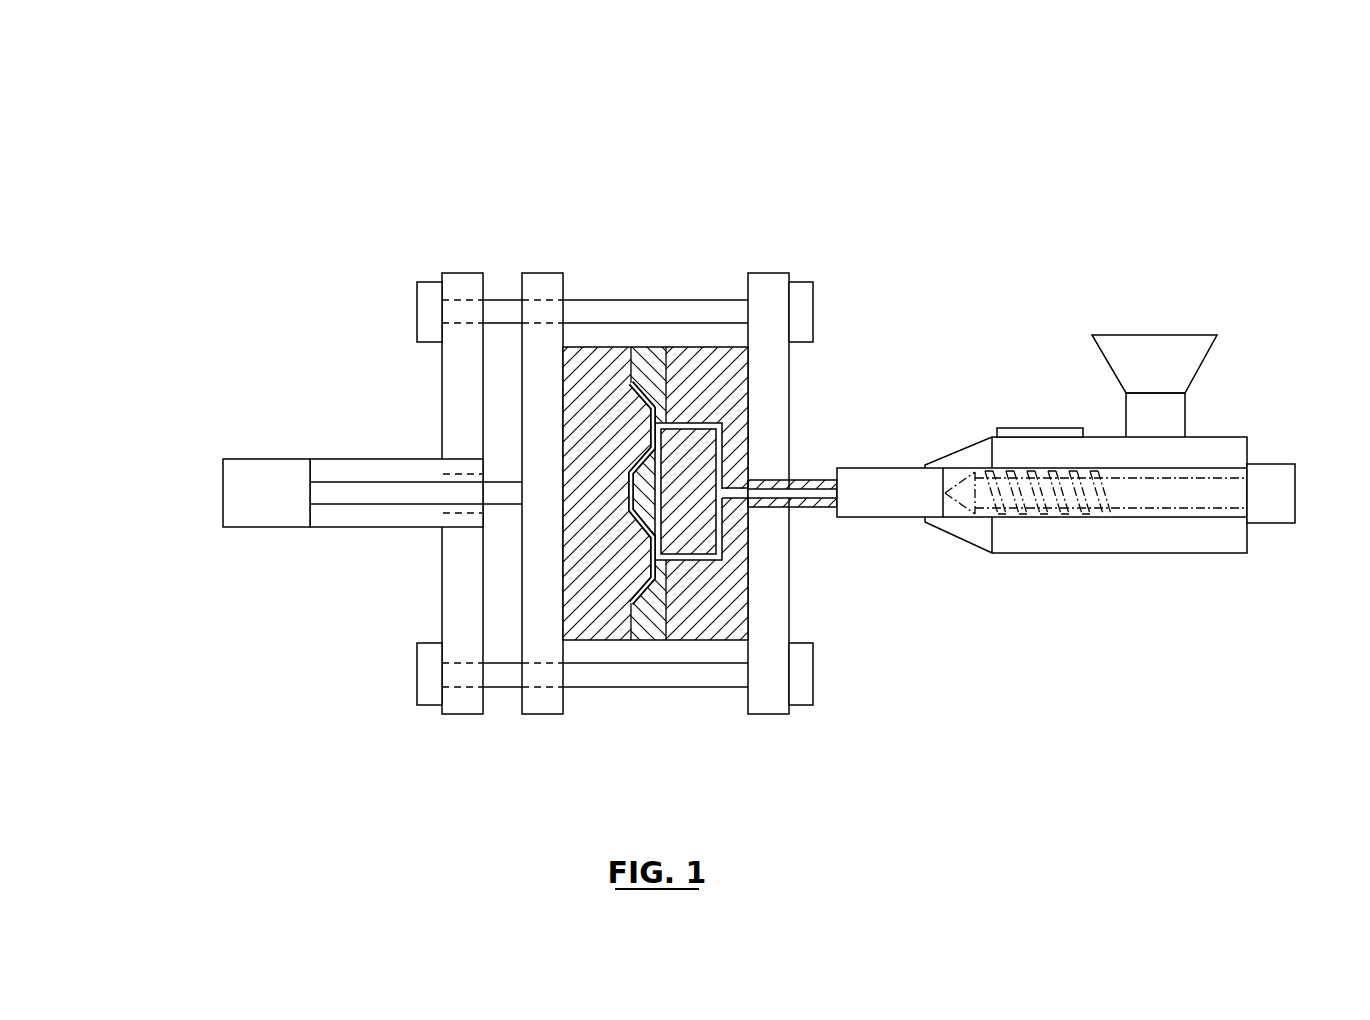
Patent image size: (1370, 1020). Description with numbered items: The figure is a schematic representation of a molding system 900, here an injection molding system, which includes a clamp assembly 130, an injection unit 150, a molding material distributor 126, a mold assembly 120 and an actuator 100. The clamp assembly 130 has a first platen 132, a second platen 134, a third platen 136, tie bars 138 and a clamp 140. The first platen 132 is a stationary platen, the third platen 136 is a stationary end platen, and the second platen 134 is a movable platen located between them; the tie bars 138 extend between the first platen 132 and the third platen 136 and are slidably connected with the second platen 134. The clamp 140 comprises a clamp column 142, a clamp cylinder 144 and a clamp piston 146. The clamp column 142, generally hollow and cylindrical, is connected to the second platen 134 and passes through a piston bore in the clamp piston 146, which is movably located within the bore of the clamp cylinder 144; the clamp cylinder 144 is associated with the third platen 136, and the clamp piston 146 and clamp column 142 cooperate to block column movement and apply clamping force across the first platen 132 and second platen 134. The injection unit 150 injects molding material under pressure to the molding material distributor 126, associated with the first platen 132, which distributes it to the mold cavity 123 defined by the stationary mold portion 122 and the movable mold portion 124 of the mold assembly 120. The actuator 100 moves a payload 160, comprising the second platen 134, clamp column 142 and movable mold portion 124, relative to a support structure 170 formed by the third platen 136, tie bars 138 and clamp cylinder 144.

The actuator 100 is at (250, 537).
The mold assembly 120 is at (633, 270).
The stationary mold portion 122 is at (652, 362).
The mold cavity 123 is at (642, 533).
The movable mold portion 124 is at (597, 360).
The molding material distributor 126 is at (720, 392).
The clamp assembly 130 is at (768, 287).
The first platen 132 is at (767, 714).
The second platen 134 is at (538, 714).
The third platen 136 is at (462, 714).
The tie bars 138 is at (505, 310).
The clamp 140 is at (312, 408).
The clamp column 142 is at (357, 505).
The clamp cylinder 144 is at (465, 465).
The clamp piston 146 is at (458, 513).
The injection unit 150 is at (1263, 435).
The payload 160 is at (518, 797).
The support structure 170 is at (638, 163).
The molding system 900 is at (1002, 212).